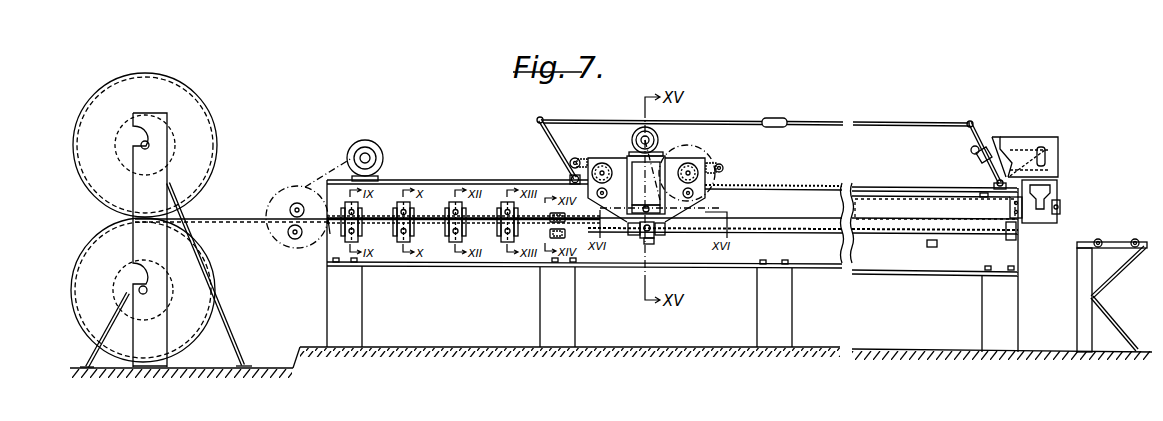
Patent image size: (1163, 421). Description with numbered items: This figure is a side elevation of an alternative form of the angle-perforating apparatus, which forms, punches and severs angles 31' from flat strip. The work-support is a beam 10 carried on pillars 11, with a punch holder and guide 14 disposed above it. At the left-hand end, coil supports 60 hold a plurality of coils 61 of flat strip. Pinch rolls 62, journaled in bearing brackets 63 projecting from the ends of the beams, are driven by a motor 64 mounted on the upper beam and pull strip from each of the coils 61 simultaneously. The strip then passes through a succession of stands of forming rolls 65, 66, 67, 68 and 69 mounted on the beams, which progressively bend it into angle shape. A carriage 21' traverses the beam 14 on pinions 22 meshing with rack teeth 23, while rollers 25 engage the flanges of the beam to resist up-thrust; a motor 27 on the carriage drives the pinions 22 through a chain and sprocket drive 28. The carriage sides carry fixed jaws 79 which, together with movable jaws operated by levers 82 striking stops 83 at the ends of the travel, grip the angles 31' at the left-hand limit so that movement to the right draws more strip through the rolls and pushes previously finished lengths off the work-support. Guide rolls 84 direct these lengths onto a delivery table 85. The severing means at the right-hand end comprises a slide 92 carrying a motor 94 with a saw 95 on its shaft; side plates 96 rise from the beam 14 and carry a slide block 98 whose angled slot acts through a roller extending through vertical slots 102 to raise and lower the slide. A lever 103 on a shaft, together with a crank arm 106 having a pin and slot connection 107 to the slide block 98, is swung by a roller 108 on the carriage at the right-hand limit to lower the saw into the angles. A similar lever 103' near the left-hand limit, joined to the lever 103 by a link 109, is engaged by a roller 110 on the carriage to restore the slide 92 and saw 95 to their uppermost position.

The work-support 10 is at (867, 270).
The pillars 11 is at (327, 303).
The punch holder and guide 14 is at (935, 209).
The carriage 21' is at (632, 174).
The pinions 22 is at (693, 165).
The rack teeth 23 is at (785, 188).
The rollers 25 is at (708, 197).
The motor 27 is at (641, 128).
The chain and sprocket drive 28 is at (682, 148).
The angles 31' is at (803, 219).
The coil supports 60 is at (140, 194).
The coils 61 is at (88, 166).
The pinch rolls 62 is at (291, 239).
The bearing brackets 63 is at (325, 245).
The motor 64 is at (372, 143).
The stand of forming rolls 65 is at (362, 230).
The stand of forming rolls 66 is at (414, 230).
The stand of forming rolls 67 is at (466, 230).
The stand of forming rolls 68 is at (518, 230).
The stand of forming rolls 69 is at (566, 231).
The fixed jaws 79 is at (636, 238).
The levers 82 is at (654, 240).
The stops 83 is at (651, 248).
The guide rolls 84 is at (1006, 238).
The delivery table 85 is at (1132, 246).
The slide 92 is at (1009, 208).
The motor 94 is at (1050, 200).
The saw 95 is at (1060, 215).
The side plates 96 is at (1030, 142).
The slide block 98 is at (1000, 142).
The vertical slots 102 is at (1047, 157).
The lever 103 is at (983, 141).
The lever 103' is at (539, 148).
The crank arm 106 is at (971, 150).
The pin and slot connection 107 is at (978, 161).
The roller 108 is at (723, 167).
The link 109 is at (810, 121).
The roller 110 is at (575, 158).